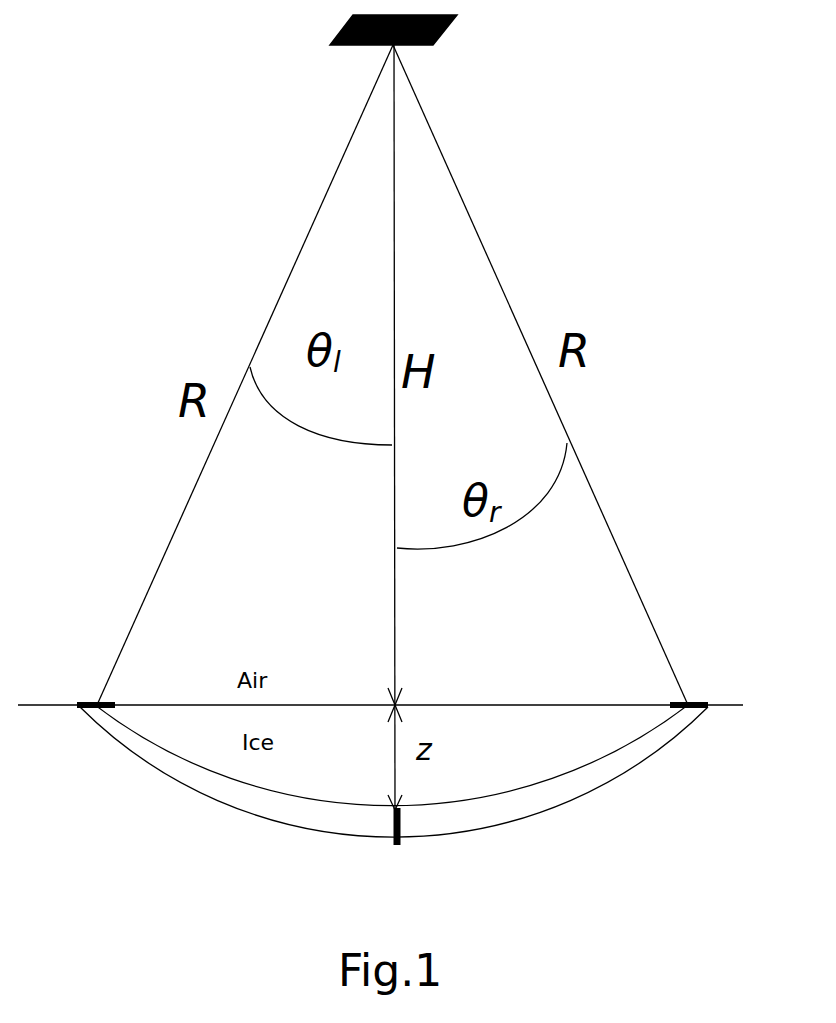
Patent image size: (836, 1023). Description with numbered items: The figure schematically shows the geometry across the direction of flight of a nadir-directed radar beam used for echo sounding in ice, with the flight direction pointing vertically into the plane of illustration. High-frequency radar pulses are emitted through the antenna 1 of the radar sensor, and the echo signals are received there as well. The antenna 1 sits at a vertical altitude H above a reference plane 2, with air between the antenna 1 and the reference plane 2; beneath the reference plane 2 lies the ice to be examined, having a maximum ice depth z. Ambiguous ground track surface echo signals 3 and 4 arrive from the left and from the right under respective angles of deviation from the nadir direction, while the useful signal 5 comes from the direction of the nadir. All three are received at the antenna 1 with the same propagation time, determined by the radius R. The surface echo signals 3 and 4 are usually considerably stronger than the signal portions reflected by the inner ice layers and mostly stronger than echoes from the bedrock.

The antenna 1 is at (346, 26).
The reference plane 2 is at (590, 703).
The surface echo signal 3 is at (97, 700).
The surface echo signal 4 is at (700, 700).
The useful signal 5 is at (403, 846).